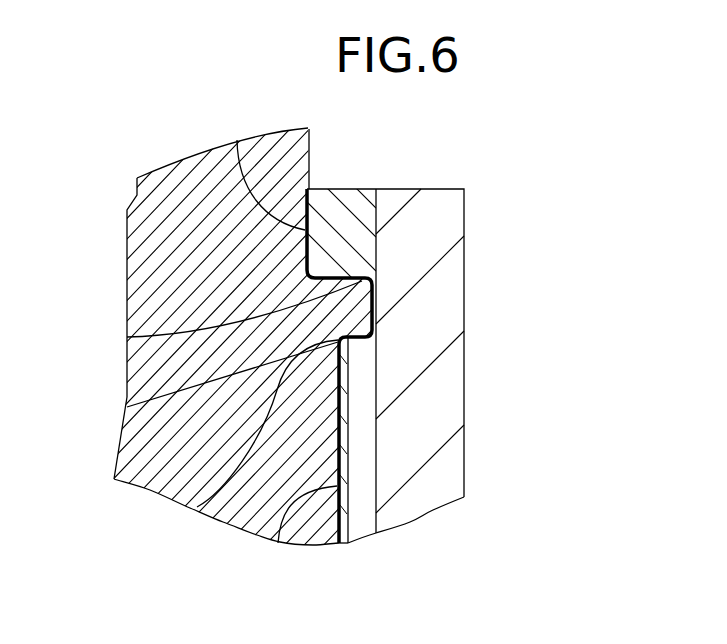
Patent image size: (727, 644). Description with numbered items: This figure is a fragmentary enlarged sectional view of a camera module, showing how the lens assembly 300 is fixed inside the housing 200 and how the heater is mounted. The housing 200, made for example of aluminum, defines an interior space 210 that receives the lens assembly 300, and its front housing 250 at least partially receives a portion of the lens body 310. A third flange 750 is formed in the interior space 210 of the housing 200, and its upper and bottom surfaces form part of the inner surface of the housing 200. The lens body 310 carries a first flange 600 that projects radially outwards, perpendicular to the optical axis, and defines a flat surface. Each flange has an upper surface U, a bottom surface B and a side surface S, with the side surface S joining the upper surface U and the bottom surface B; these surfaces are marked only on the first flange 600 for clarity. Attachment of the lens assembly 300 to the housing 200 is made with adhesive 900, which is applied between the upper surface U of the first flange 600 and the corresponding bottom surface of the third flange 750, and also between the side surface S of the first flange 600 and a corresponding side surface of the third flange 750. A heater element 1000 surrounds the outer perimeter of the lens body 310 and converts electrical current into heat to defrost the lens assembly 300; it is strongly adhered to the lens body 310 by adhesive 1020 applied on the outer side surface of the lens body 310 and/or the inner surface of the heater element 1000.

The lens assembly 300 is at (127, 222).
The lens body 310 is at (174, 179).
The adhesive 900 is at (237, 140).
The third flange 750 is at (351, 190).
The front housing 250 is at (430, 218).
The housing 200 is at (466, 295).
The first flange 600 is at (342, 318).
The heater element 1000 is at (352, 443).
The interior space 210 is at (363, 485).
The adhesive 1020 is at (278, 543).
The upper surface U is at (127, 337).
The side surface S is at (127, 407).
The bottom surface B is at (197, 507).